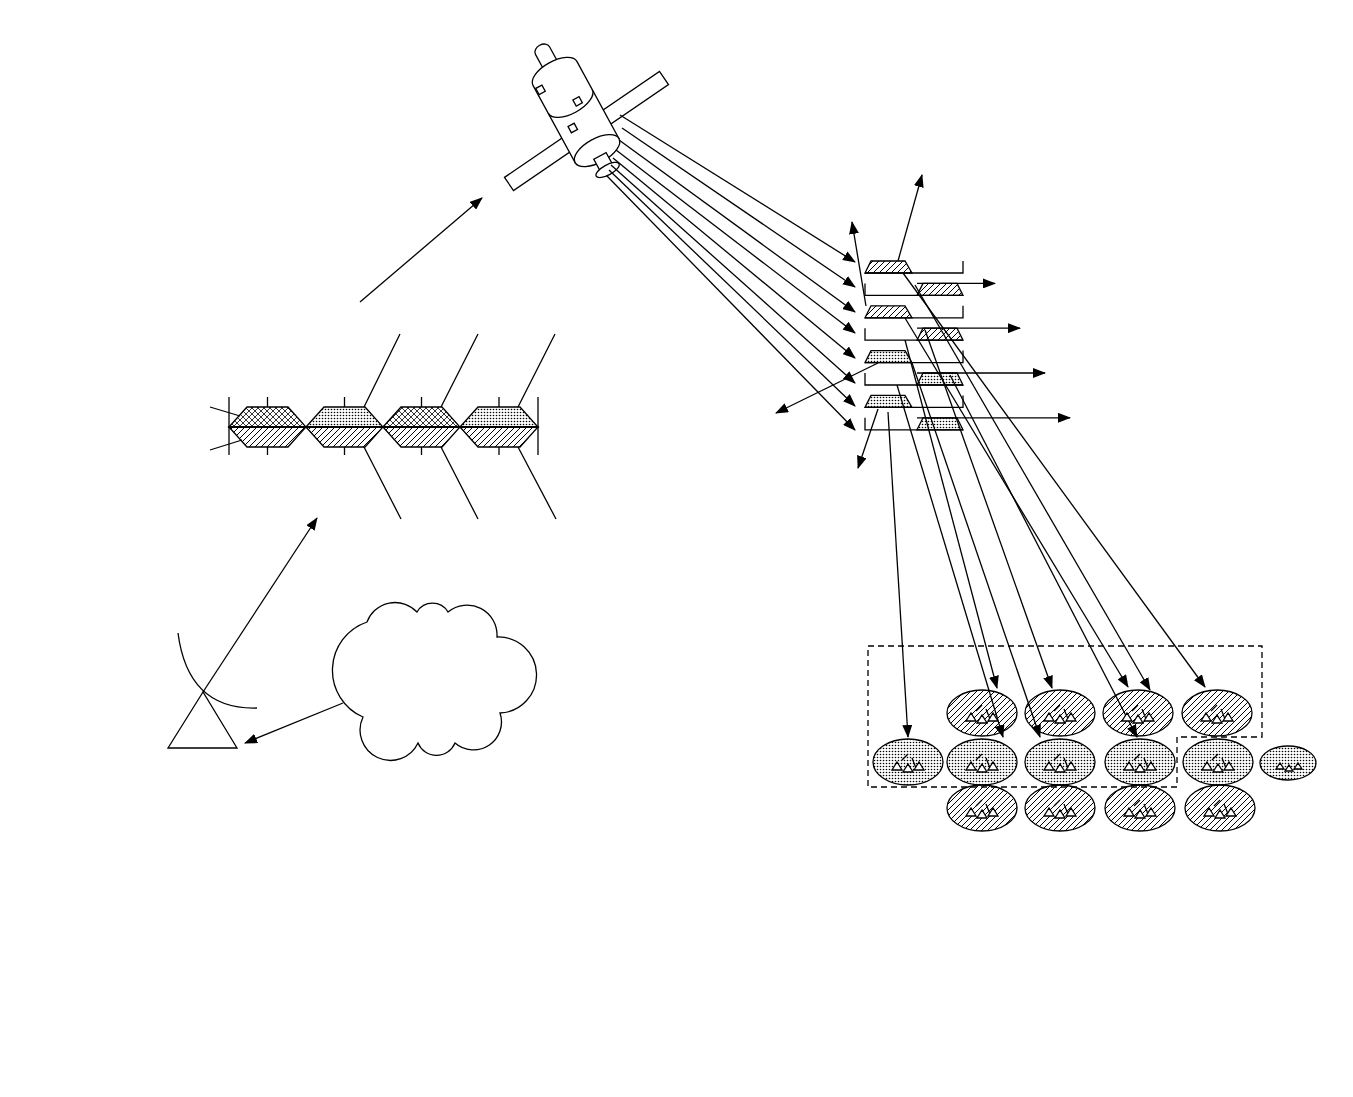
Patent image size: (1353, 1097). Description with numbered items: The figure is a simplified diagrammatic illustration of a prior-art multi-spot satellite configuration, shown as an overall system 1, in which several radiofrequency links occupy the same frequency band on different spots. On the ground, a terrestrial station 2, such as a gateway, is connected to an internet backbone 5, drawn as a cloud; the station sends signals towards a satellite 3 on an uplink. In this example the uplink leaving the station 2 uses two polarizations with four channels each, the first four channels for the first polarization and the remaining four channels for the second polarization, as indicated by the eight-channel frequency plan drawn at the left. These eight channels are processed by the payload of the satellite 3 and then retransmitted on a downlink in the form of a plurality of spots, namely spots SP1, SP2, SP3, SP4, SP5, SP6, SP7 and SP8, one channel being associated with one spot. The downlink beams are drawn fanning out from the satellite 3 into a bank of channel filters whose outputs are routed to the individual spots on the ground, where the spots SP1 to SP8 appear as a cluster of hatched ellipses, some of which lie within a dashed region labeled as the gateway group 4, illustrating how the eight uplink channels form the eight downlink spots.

The satellite communication system 1 is at (345, 185).
The terrestrial station 2 is at (217, 772).
The satellite 3 is at (517, 68).
The gateway group 4 is at (1247, 642).
The internet backbone 5 is at (492, 612).
The spot SP1 is at (1220, 688).
The spot SP2 is at (1141, 688).
The spot SP3 is at (1068, 688).
The spot SP4 is at (965, 688).
The spot SP5 is at (1033, 780).
The spot SP6 is at (1165, 780).
The spot SP7 is at (897, 787).
The spot SP8 is at (952, 777).